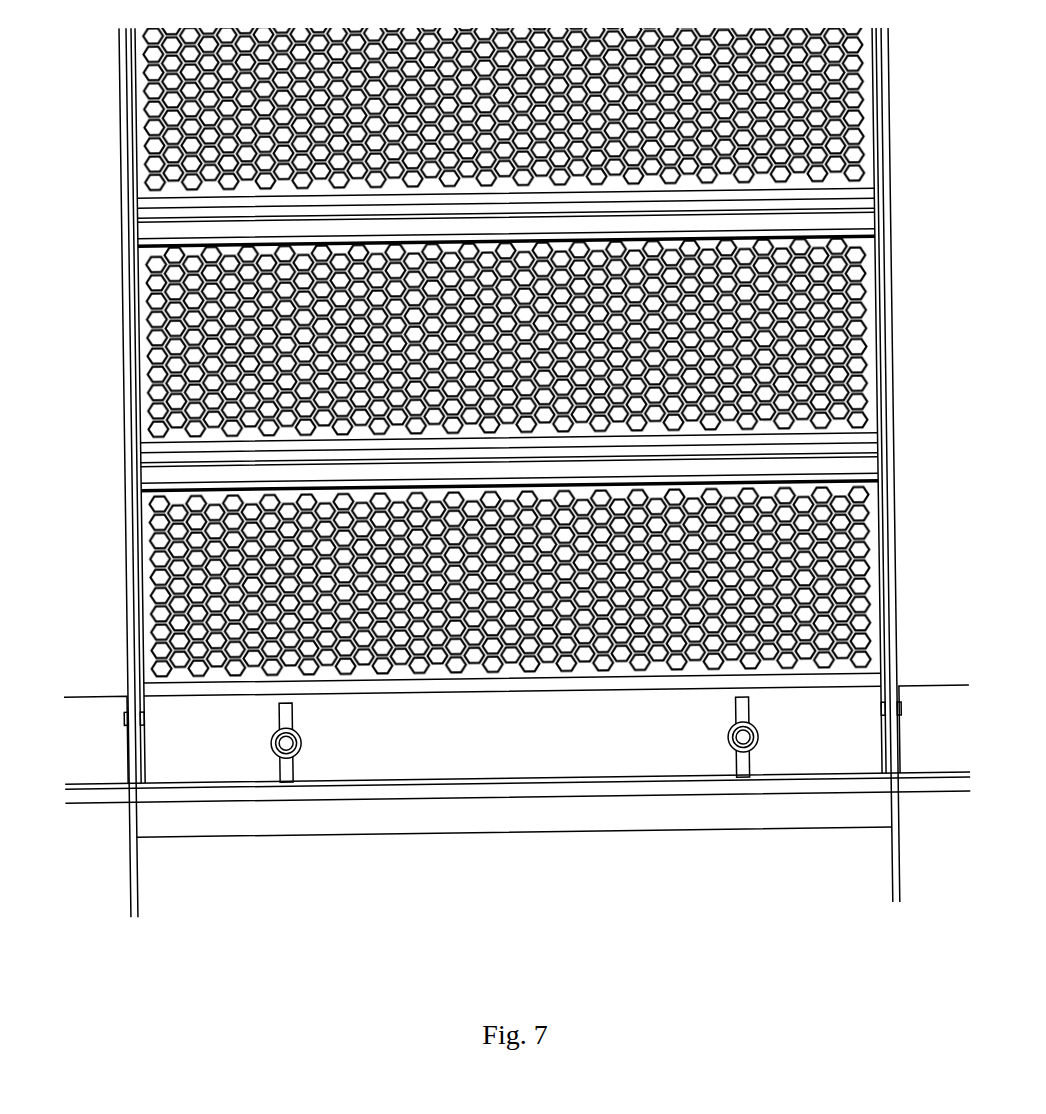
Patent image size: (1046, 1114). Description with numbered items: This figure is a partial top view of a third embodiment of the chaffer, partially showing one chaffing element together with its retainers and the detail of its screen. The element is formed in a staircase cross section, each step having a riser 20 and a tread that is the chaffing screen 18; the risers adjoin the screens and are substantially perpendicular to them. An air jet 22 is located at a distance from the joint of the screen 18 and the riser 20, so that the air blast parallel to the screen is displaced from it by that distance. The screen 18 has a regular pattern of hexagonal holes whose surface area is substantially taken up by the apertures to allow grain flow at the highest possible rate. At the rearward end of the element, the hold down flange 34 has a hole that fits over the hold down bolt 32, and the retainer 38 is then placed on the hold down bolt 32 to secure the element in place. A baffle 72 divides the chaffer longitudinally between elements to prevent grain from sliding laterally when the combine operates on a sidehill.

The chaffing screen 18 is at (351, 670).
The riser 20 is at (429, 484).
The air jet 22 is at (536, 467).
The hold down bolt 32 is at (725, 750).
The hold down flange 34 is at (196, 784).
The retainer 38 is at (747, 768).
The baffle 72 is at (132, 852).